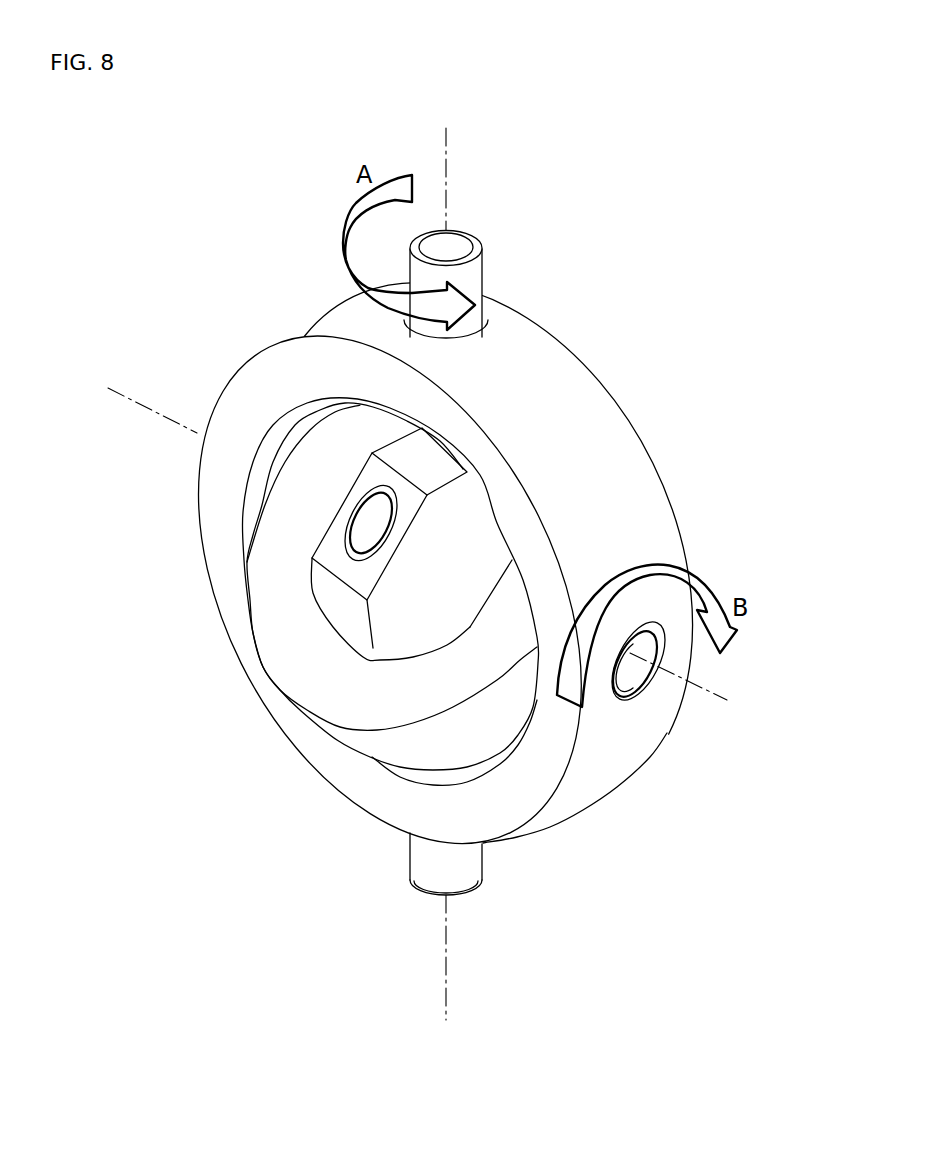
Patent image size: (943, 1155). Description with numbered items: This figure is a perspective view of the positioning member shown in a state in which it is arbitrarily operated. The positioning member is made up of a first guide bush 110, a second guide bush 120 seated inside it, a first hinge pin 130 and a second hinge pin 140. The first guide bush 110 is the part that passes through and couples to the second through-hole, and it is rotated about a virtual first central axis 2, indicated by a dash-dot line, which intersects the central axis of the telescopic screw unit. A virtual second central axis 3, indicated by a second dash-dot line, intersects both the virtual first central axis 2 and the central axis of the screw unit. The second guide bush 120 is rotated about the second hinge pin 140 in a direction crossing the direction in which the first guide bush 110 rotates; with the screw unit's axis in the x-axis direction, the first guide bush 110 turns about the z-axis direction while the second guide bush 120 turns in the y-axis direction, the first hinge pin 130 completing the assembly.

The virtual first central axis 2 is at (450, 130).
The virtual second central axis 3 is at (727, 700).
The first guide bush 110 is at (606, 404).
The second guide bush 120 is at (265, 642).
The first hinge pin 130 is at (484, 266).
The second hinge pin 140 is at (365, 527).